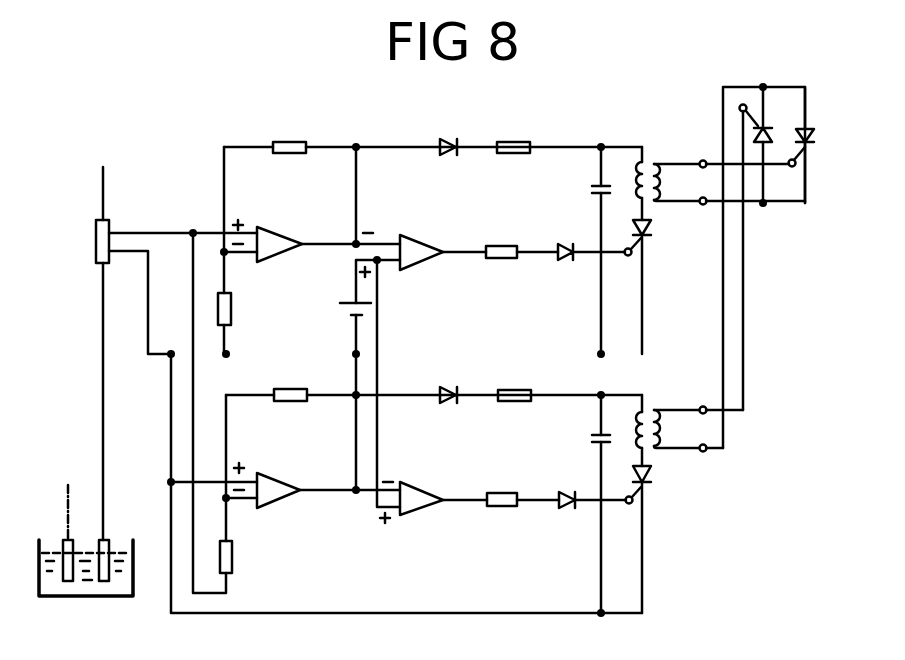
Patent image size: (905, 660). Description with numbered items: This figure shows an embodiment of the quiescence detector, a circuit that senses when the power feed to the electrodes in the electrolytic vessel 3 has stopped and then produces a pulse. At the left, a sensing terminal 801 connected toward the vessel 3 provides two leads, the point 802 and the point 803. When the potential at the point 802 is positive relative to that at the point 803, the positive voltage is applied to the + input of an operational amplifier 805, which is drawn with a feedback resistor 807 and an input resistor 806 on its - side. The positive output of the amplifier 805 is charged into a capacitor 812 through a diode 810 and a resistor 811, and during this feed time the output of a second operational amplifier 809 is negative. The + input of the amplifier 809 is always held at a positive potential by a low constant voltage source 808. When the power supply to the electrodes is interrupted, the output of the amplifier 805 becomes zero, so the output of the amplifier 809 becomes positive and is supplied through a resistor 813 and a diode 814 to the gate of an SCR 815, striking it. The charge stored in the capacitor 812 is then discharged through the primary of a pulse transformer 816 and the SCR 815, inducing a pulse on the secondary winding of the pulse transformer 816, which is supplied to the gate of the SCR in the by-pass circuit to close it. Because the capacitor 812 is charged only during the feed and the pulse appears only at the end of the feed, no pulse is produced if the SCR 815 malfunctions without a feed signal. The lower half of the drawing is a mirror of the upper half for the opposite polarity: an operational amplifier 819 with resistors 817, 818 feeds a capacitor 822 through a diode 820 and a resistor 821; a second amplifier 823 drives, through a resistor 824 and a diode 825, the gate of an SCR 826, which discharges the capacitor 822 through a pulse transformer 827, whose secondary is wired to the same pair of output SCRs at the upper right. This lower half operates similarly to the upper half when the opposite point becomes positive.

The vessel 3 is at (90, 597).
The sensing electrode terminal 801 is at (96, 241).
The point 802 is at (134, 233).
The point 803 is at (148, 312).
The operational amplifier 805 is at (283, 238).
The resistor 806 is at (231, 296).
The feedback resistor 807 is at (299, 129).
The low constant voltage source 808 is at (351, 316).
The operational amplifier 809 is at (428, 228).
The diode 810 is at (450, 134).
The resistor 811 is at (517, 133).
The capacitor 812 is at (592, 189).
The resistor 813 is at (503, 237).
The diode 814 is at (566, 243).
The SCR 815 is at (645, 233).
The pulse transformer 816 is at (649, 163).
The resistor 817 is at (232, 546).
The feedback resistor 818 is at (279, 402).
The operational amplifier 819 is at (278, 503).
The diode 820 is at (446, 403).
The resistor 821 is at (512, 401).
The capacitor 822 is at (592, 433).
The comparator amplifier 823 is at (408, 513).
The resistor 824 is at (495, 506).
The diode 825 is at (571, 516).
The thyristor (SCR) 826 is at (645, 479).
The pulse transformer 827 is at (652, 407).